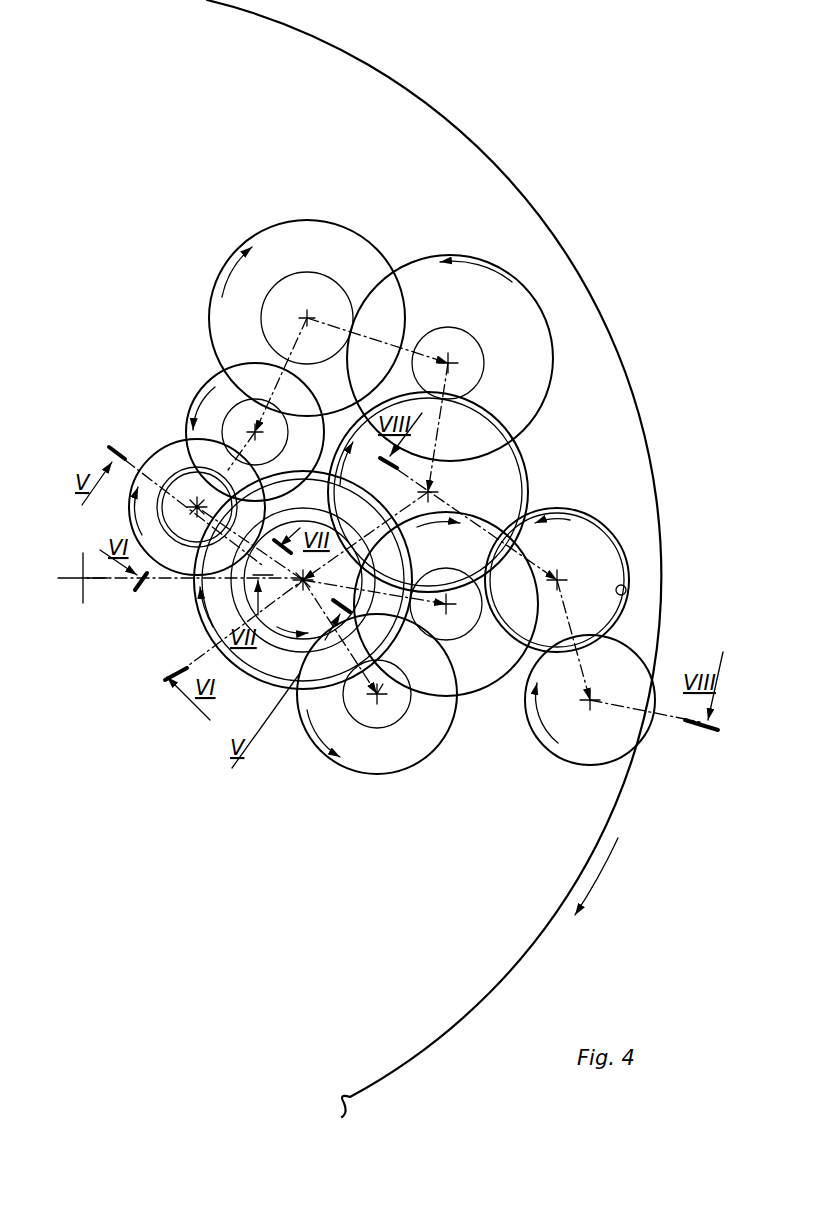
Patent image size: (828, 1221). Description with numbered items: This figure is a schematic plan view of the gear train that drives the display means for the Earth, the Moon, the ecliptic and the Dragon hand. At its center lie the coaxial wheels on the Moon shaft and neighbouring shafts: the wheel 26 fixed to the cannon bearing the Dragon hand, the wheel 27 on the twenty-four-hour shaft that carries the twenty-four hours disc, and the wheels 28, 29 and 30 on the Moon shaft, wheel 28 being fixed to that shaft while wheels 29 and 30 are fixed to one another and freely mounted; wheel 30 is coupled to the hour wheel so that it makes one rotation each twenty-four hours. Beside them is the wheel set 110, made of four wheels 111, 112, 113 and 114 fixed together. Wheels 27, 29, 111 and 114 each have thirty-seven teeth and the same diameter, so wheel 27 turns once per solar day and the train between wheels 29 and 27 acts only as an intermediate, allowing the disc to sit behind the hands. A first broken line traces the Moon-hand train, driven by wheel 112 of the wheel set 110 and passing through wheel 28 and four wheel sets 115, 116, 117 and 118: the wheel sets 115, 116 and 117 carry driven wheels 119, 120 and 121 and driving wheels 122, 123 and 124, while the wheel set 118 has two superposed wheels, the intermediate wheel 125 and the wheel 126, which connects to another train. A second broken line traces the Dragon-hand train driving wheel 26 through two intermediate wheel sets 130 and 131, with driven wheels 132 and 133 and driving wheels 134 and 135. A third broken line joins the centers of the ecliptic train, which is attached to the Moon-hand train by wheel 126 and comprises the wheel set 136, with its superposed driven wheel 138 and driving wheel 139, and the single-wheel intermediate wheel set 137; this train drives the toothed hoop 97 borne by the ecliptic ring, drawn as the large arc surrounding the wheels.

The wheel 26 is at (325, 625).
The wheel 27 is at (262, 640).
The wheel 28 is at (253, 620).
The wheel 29 is at (250, 662).
The wheel 30 is at (262, 615).
The toothed hoop 97 is at (458, 133).
The wheel set 110 is at (151, 512).
The wheel 111 is at (142, 457).
The wheel 112 is at (178, 548).
The wheel 113 is at (170, 468).
The wheel 114 is at (167, 470).
The wheel set 115 is at (189, 417).
The wheel set 116 is at (327, 286).
The wheel set 117 is at (501, 349).
The wheel set 118 is at (478, 492).
The driven wheel 119 is at (192, 408).
The driven wheel 120 is at (307, 292).
The driven wheel 121 is at (548, 368).
The driving wheel 122 is at (237, 408).
The driving wheel 123 is at (290, 275).
The driving wheel 124 is at (477, 373).
The wheel 125 is at (466, 492).
The wheel 126 is at (527, 497).
The intermediate wheel set 130 is at (413, 800).
The intermediate wheel set 131 is at (446, 684).
The driven wheel 132 is at (372, 727).
The driven wheel 133 is at (487, 688).
The driving wheel 134 is at (401, 718).
The driving wheel 135 is at (457, 636).
The wheel set 136 is at (612, 580).
The wheel set 137 is at (598, 762).
The driven wheel 138 is at (647, 545).
The driving wheel 139 is at (626, 598).